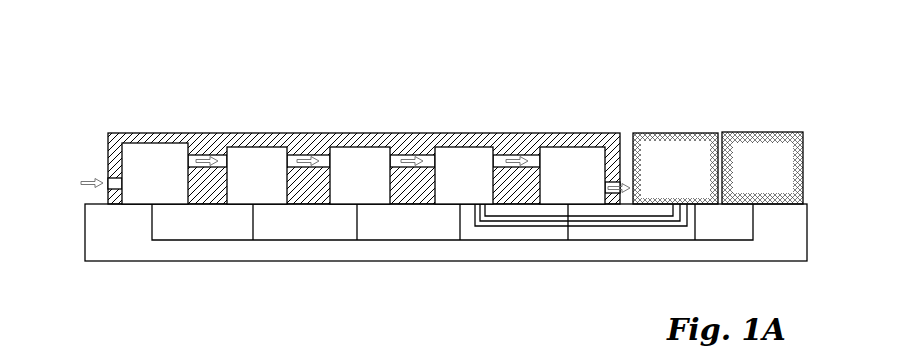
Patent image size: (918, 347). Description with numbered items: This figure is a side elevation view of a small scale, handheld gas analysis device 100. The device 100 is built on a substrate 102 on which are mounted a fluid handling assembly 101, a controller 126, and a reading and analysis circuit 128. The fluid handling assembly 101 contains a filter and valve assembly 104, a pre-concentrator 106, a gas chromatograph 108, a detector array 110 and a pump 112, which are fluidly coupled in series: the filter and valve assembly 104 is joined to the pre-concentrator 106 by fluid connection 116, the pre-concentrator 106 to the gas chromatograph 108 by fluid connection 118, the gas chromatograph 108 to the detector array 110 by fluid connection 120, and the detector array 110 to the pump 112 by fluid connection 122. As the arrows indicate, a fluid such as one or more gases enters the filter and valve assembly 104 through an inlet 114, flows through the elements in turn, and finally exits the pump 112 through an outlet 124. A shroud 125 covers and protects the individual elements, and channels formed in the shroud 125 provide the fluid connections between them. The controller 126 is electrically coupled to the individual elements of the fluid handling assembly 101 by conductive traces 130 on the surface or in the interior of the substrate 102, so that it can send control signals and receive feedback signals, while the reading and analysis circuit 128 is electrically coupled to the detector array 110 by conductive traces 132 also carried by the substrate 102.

The gas analysis device 100 is at (660, 45).
The fluid handling assembly 101 is at (365, 134).
The substrate 102 is at (137, 253).
The filter and valve assembly 104 is at (155, 173).
The pre-concentrator 106 is at (257, 175).
The gas chromatograph 108 is at (360, 175).
The detector array 110 is at (464, 175).
The pump 112 is at (572, 175).
The inlet 114 is at (108, 177).
The fluid connection 116 is at (214, 158).
The fluid connection 118 is at (325, 159).
The fluid connection 120 is at (430, 159).
The fluid connection 122 is at (535, 160).
The outlet 124 is at (618, 183).
The shroud 125 is at (133, 135).
The controller 126 is at (762, 168).
The reading and analysis circuit 128 is at (675, 168).
The conductive traces 130 is at (275, 240).
The conductive traces 132 is at (530, 222).